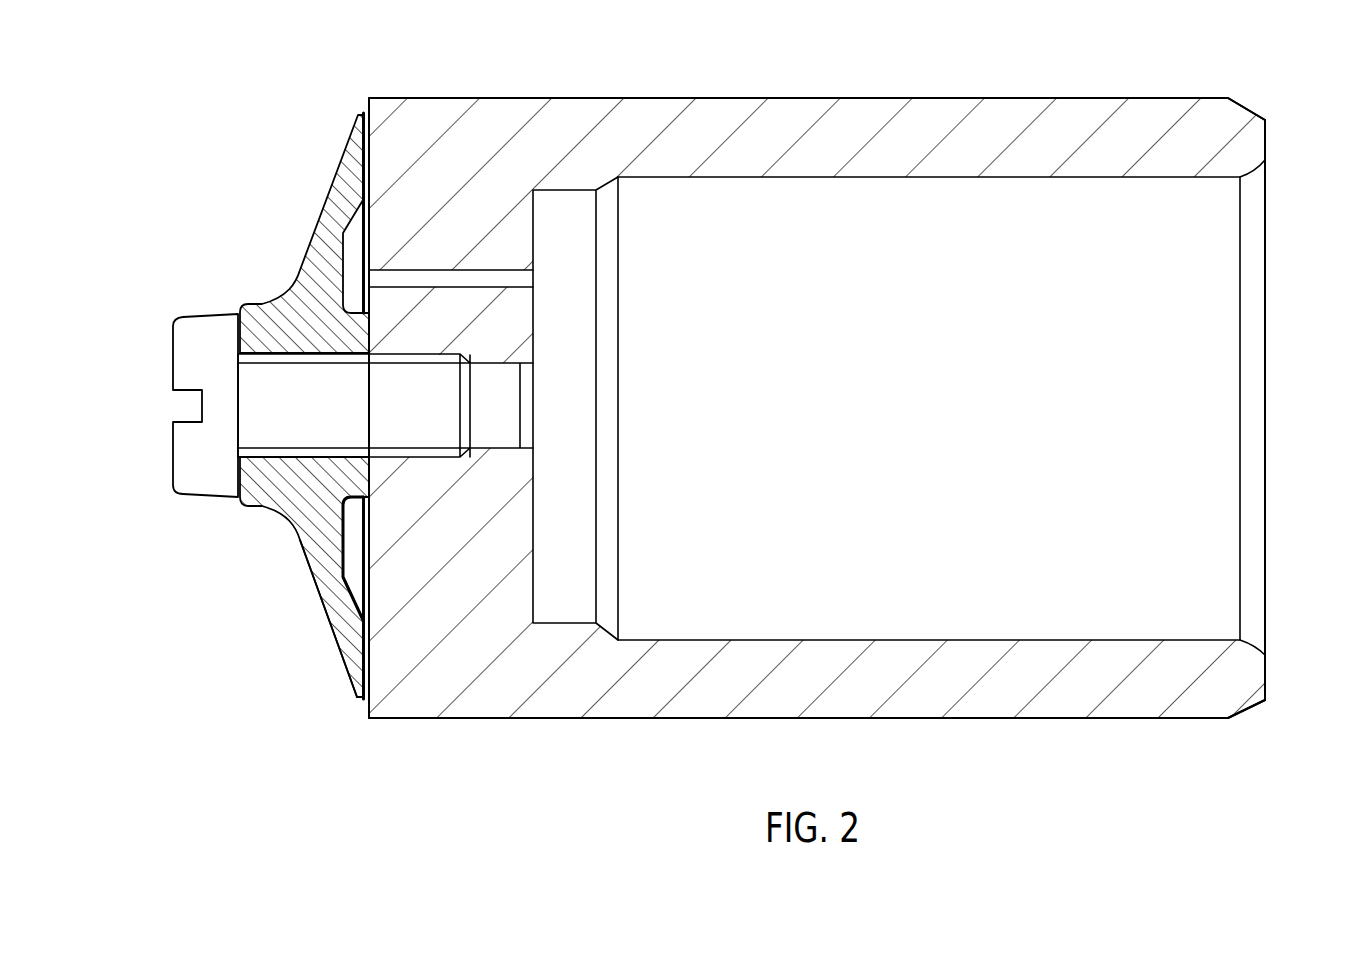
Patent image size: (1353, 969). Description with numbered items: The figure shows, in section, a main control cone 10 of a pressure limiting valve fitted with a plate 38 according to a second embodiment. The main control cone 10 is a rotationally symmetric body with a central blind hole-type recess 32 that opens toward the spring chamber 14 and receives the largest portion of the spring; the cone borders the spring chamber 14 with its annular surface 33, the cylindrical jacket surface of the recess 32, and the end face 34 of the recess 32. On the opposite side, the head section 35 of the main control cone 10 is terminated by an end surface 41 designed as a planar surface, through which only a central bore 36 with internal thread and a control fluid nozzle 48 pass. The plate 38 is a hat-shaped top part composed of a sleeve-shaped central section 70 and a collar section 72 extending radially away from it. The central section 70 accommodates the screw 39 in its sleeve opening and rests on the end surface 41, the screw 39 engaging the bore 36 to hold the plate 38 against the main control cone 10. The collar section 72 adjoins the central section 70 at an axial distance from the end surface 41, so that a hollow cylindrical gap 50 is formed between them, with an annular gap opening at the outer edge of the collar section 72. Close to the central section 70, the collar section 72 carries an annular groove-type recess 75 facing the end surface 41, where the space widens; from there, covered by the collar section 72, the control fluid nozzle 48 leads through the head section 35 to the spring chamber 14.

The main control cone 10 is at (1147, 98).
The spring chamber 14 is at (1327, 266).
The recess 32 is at (1077, 178).
The annular surface 33 is at (1267, 148).
The end face 34 is at (534, 537).
The head section 35 is at (483, 650).
The bore 36 is at (432, 460).
The plate 38 is at (297, 263).
The screw 39 is at (172, 488).
The end surface 41 is at (367, 105).
The control fluid nozzle 48 is at (453, 278).
The hollow cylindrical gap 50 is at (362, 703).
The central section 70 is at (287, 470).
The collar section 72 is at (353, 628).
The annular groove-type recess 75 is at (342, 537).